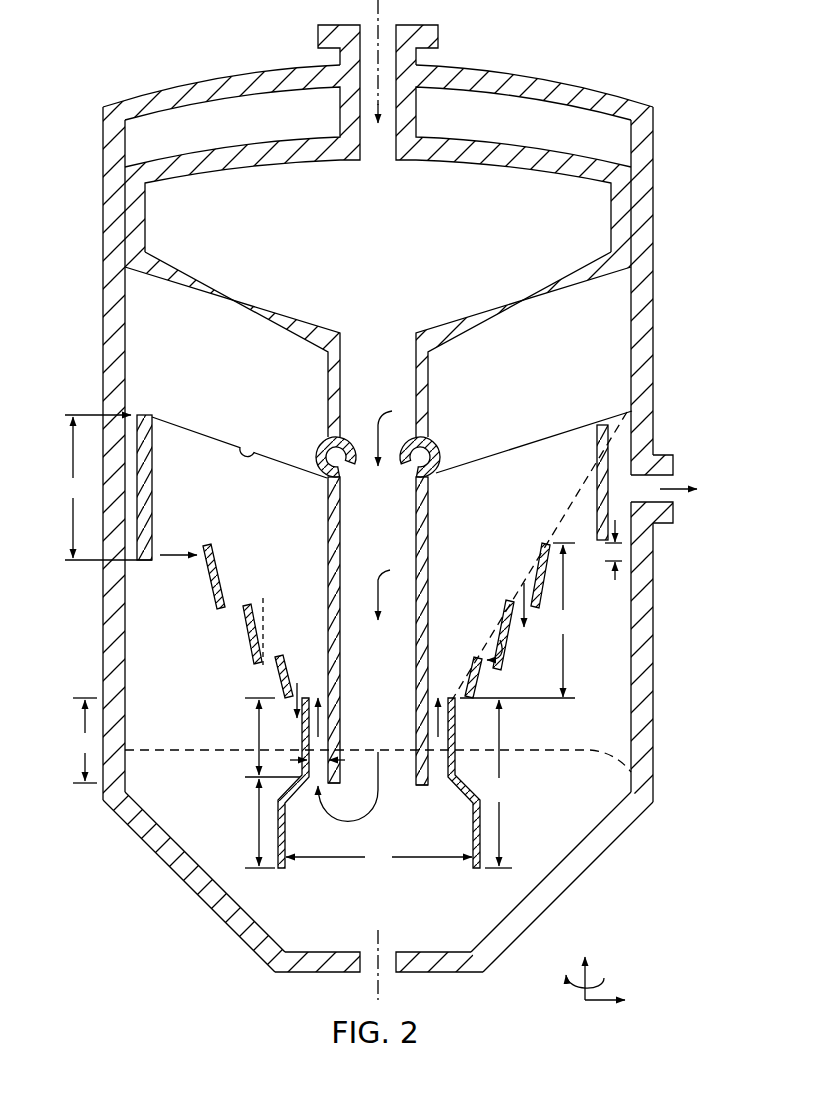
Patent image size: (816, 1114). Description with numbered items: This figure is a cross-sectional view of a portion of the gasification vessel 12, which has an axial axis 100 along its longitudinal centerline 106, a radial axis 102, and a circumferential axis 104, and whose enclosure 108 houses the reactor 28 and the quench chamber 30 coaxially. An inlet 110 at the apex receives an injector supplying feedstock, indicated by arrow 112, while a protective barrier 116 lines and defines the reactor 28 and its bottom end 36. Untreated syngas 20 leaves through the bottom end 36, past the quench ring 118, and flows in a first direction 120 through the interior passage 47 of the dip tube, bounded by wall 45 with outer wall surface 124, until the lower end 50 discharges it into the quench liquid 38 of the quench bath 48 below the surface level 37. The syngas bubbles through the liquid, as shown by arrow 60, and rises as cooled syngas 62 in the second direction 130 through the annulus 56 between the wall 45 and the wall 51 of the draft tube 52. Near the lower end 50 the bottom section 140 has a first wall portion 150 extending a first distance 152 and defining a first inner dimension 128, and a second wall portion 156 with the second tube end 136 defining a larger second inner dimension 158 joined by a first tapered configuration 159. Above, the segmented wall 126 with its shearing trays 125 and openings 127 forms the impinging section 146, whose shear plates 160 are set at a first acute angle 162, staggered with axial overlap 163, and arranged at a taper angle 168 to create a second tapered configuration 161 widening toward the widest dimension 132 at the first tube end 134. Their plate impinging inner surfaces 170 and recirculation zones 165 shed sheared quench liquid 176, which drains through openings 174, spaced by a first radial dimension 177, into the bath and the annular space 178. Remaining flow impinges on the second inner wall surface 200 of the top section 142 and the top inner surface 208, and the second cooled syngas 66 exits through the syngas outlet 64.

The gasification vessel 12 is at (156, 66).
The untreated syngas 20 is at (391, 429).
The reactor 28 is at (366, 220).
The quench chamber 30 is at (676, 659).
The bottom end 36 is at (366, 385).
The surface level 37 is at (648, 773).
The quench liquid 38 is at (425, 939).
The wall of dip tube 45 is at (340, 660).
The interior passage 47 is at (366, 534).
The quench bath 48 is at (574, 903).
The lower end of dip tube 50 is at (423, 787).
The wall of draft tube 51 is at (125, 592).
The draft tube 52 is at (232, 772).
The annulus 56 is at (221, 512).
The arrow 60 is at (350, 824).
The cooled syngas 62 is at (172, 538).
The syngas outlet 64 is at (670, 456).
The second cooled syngas 66 is at (668, 503).
The axial axis 100 is at (590, 975).
The radial axis 102 is at (602, 998).
The circumferential axis 104 is at (578, 985).
The longitudinal centerline 106 is at (383, 985).
The enclosure 108 is at (102, 386).
The inlet 110 is at (438, 38).
The arrow 112 is at (416, 116).
The protective barrier 116 is at (215, 304).
The quench ring 118 is at (436, 450).
The first direction 120 is at (393, 584).
The outer wall surface 124 is at (430, 505).
The shearing trays 125 is at (530, 534).
The segmented wall 126 is at (465, 730).
The openings 127 is at (592, 498).
The first inner dimension 128 is at (337, 758).
The second direction 130 is at (342, 727).
The widest dimension 132 is at (178, 553).
The first tube end 134 is at (538, 575).
The second tube end 136 is at (286, 868).
The bottom section 140 is at (498, 784).
The top section 142 is at (104, 487).
The impinging section 146 is at (520, 620).
The first wall portion 150 is at (218, 587).
The first distance 152 is at (85, 740).
The second wall portion 156 is at (256, 822).
The second inner dimension 158 is at (379, 856).
The first tapered configuration 159 is at (469, 777).
The shear plates 160 is at (220, 602).
The second tapered configuration 161 is at (176, 590).
The first acute angle 162 is at (248, 604).
The axial overlap 163 is at (618, 580).
The recirculation zones 165 is at (490, 673).
The taper angle 168 is at (470, 671).
The plate impinging inner surfaces 170 is at (218, 575).
The openings 174 is at (222, 620).
The sheared quench liquid 176 is at (284, 670).
The first radial dimension 177 is at (257, 668).
The annular space 178 is at (557, 711).
The second inner wall surface 200 is at (153, 490).
The top inner surface 208 is at (255, 452).